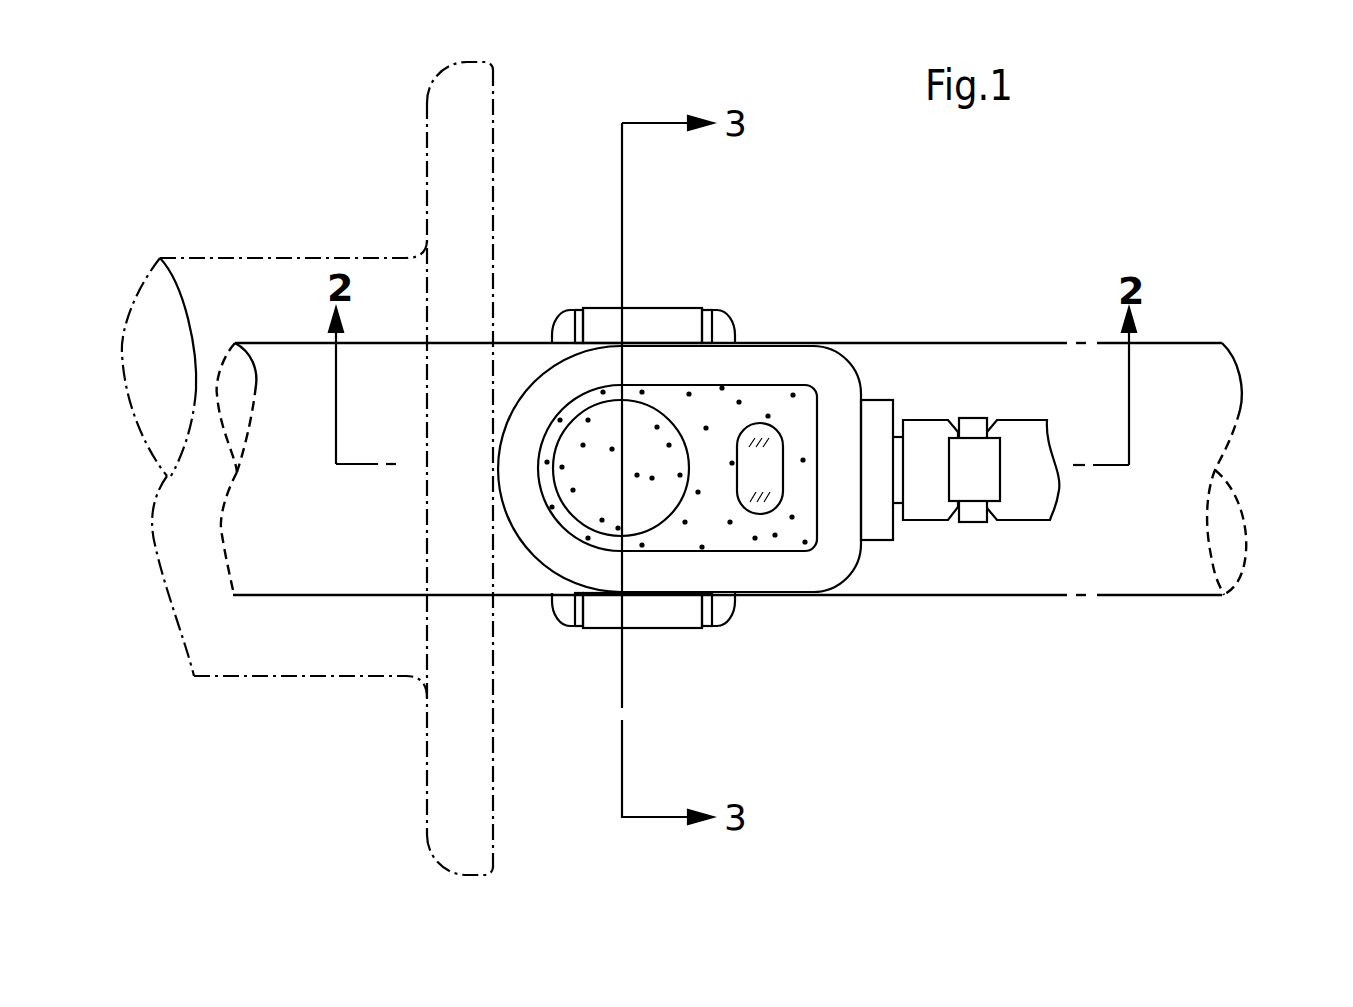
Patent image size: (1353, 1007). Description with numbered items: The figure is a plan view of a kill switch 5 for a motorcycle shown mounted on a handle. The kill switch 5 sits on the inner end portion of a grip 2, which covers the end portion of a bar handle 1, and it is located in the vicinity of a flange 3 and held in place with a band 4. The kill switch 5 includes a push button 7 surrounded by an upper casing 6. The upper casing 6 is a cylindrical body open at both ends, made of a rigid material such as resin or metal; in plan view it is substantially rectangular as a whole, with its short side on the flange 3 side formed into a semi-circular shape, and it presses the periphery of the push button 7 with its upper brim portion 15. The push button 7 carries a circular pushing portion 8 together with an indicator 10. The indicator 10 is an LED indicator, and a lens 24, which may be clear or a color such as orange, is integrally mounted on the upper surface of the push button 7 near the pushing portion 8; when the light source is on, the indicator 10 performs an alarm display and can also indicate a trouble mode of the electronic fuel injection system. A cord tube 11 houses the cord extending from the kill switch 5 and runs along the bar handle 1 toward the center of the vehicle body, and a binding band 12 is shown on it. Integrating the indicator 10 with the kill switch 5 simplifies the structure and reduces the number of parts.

The bar handle 1 is at (1173, 398).
The grip 2 is at (238, 270).
The flange 3 is at (427, 138).
The band 4 is at (673, 318).
The kill switch 5 is at (818, 610).
The upper casing 6 is at (765, 343).
The push button 7 is at (698, 530).
The circular pushing portion 8 is at (585, 510).
The indicator 10 is at (783, 443).
The cord tube 11 is at (1030, 437).
The binding band 12 is at (968, 455).
The upper brim portion 15 is at (552, 397).
The lens 24 is at (768, 498).